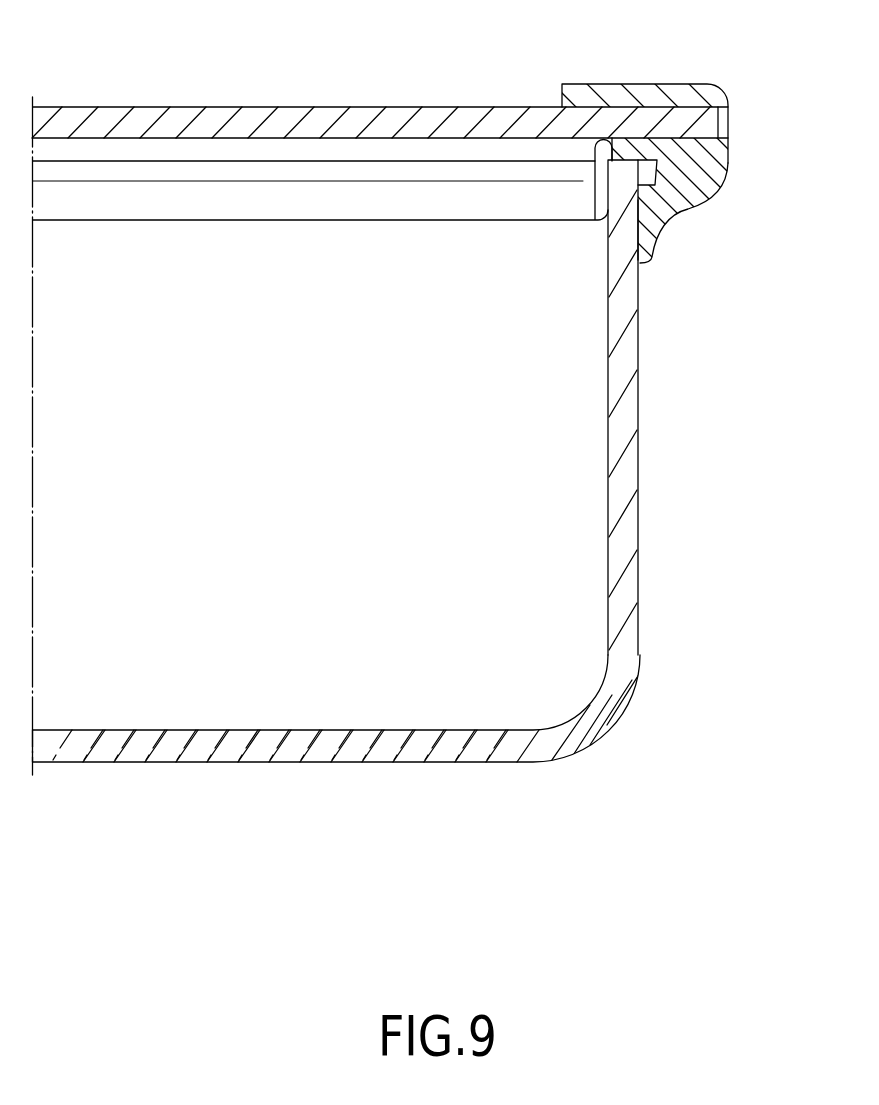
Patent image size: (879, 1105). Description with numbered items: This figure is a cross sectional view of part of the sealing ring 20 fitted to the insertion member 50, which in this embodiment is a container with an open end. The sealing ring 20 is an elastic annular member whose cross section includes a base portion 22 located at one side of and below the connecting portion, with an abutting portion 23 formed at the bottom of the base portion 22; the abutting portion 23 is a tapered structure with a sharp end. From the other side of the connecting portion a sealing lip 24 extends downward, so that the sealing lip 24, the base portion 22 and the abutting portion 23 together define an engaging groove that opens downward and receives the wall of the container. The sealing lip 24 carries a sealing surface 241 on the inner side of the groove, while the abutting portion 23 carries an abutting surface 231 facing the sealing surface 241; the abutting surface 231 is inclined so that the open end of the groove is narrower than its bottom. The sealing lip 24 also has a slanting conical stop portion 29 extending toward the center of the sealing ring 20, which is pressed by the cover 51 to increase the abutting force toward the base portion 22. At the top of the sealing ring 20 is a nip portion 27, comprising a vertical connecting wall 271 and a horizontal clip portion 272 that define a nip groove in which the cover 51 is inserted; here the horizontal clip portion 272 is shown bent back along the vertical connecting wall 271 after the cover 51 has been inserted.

The sealing ring 20 is at (283, 221).
The base portion 22 is at (713, 173).
The abutting portion 23 is at (660, 233).
The abutting surface 231 is at (637, 227).
The sealing lip 24 is at (598, 205).
The sealing surface 241 is at (628, 163).
The nip portion 27 is at (692, 89).
The vertical connecting wall 271 is at (725, 123).
The horizontal clip portion 272 is at (667, 97).
The stop portion 29 is at (583, 165).
The insertion member 50 is at (550, 755).
The cover 51 is at (247, 120).